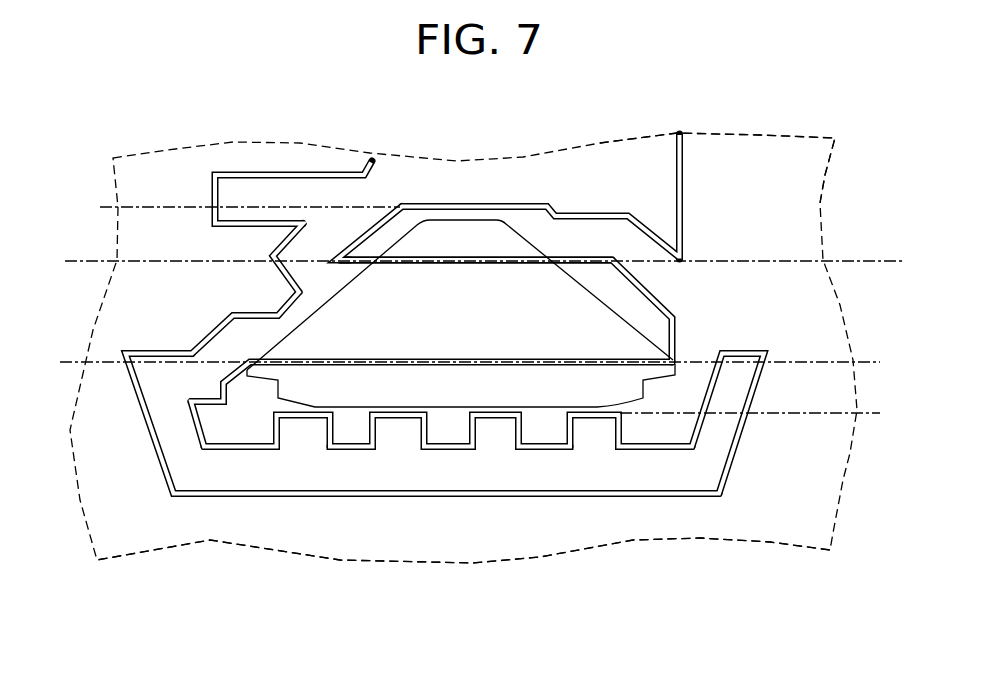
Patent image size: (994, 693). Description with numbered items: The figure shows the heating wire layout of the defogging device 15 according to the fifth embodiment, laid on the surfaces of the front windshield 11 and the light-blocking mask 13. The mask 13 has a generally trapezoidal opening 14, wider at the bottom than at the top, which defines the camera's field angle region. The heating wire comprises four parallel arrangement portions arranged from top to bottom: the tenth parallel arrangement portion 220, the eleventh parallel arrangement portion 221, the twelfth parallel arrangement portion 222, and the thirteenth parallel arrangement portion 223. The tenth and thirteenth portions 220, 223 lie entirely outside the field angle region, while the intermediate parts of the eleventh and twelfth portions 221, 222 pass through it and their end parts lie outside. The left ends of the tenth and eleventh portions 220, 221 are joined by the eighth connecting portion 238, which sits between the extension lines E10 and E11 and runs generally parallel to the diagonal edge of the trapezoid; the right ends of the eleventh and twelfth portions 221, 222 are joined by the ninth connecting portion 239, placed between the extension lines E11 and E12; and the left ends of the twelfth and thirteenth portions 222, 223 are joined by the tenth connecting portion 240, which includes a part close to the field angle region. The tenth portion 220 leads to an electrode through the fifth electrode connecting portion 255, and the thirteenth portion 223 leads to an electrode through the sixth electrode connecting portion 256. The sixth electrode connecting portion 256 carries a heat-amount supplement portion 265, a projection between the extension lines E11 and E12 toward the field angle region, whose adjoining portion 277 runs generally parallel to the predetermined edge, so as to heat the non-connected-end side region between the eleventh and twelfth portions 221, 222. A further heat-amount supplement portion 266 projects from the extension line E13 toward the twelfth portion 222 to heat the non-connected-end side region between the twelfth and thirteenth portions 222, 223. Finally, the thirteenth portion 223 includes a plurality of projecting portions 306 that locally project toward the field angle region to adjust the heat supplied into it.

The front windshield 11 is at (807, 502).
The mask 13 is at (760, 507).
The opening 14 is at (405, 322).
The defogging device 15 is at (858, 149).
The 10th parallel arrangement portion 220 is at (470, 203).
The 11th parallel arrangement portion 221 is at (450, 257).
The 12th parallel arrangement portion 222 is at (438, 363).
The 13th parallel arrangement portion 223 is at (548, 443).
The 8th connecting portion 238 is at (367, 233).
The 9th connecting portion 239 is at (652, 290).
The 10th connecting portion 240 is at (197, 430).
The 5th electrode connecting portion 255 is at (683, 178).
The 6th electrode connecting portion 256 is at (270, 172).
The heat-amount supplement portion 265 is at (280, 273).
The heat-amount supplement portion 266 is at (763, 385).
The adjoining portion 277 is at (287, 303).
The projecting portions 306 is at (493, 420).
The extension line of the 10th parallel arrangement portion E10 is at (112, 207).
The extension line of the 11th parallel arrangement portion E11 is at (875, 225).
The extension line of the 12th parallel arrangement portion E12 is at (895, 338).
The extension line of the 13th parallel arrangement portion E13 is at (860, 413).